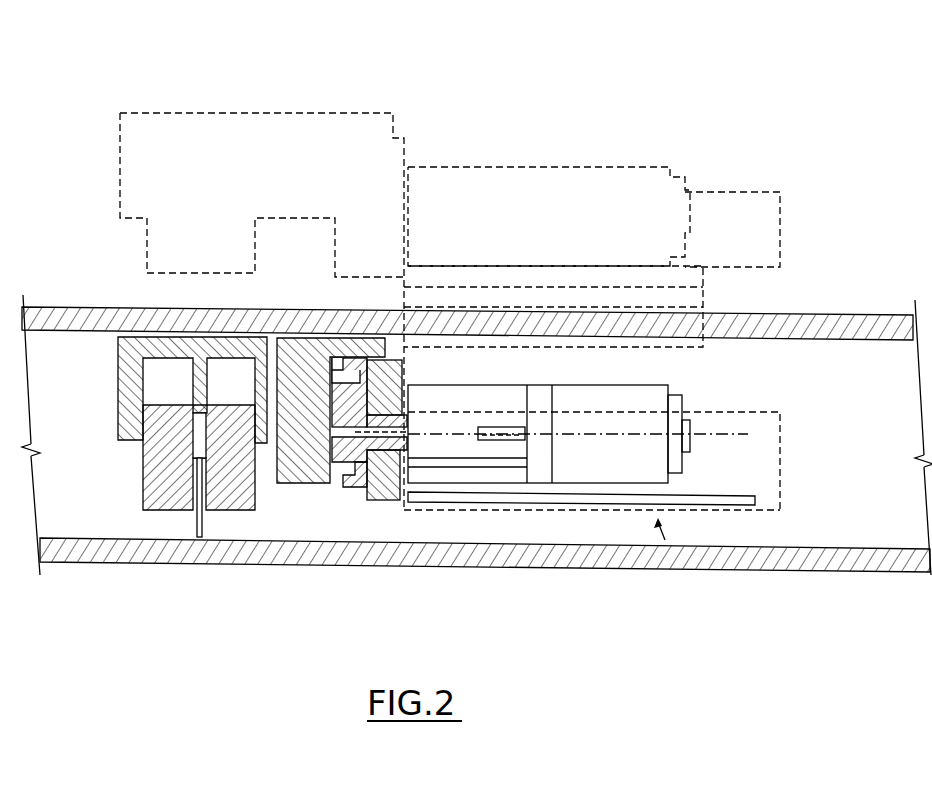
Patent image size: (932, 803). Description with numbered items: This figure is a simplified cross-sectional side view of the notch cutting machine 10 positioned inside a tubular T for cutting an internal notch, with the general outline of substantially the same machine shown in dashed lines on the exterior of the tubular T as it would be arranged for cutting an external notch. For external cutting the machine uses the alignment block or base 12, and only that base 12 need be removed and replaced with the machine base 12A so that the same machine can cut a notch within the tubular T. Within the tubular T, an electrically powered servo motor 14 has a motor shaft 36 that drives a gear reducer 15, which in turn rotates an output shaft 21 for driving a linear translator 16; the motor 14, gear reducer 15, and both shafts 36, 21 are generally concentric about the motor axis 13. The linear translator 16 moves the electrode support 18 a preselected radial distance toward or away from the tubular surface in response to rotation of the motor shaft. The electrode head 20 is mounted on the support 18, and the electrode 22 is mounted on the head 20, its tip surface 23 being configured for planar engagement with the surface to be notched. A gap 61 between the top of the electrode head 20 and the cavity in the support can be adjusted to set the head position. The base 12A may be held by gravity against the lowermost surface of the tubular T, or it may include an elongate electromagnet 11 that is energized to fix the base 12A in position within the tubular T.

The notch cutting machine 10 is at (667, 548).
The elongate electromagnet 11 is at (703, 510).
The alignment block or machine base 12 is at (763, 263).
The machine base 12A is at (718, 418).
The motor axis 13 is at (713, 438).
The servo motor 14 is at (629, 505).
The gear reducer 15 is at (475, 470).
The linear translator 16 is at (387, 500).
The electrode support 18 is at (150, 327).
The electrode head 20 is at (225, 518).
The output shaft 21 is at (370, 492).
The electrode 22 is at (193, 522).
The tip surface 23 is at (204, 545).
The motor shaft 36 is at (515, 440).
The gap 61 is at (177, 385).
The tubular T is at (565, 570).